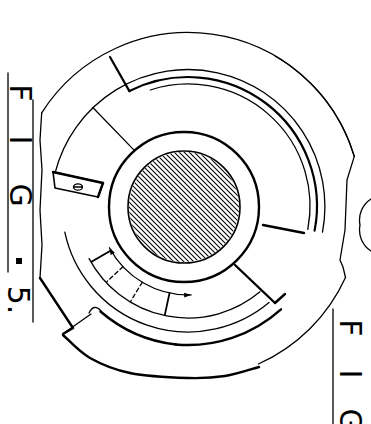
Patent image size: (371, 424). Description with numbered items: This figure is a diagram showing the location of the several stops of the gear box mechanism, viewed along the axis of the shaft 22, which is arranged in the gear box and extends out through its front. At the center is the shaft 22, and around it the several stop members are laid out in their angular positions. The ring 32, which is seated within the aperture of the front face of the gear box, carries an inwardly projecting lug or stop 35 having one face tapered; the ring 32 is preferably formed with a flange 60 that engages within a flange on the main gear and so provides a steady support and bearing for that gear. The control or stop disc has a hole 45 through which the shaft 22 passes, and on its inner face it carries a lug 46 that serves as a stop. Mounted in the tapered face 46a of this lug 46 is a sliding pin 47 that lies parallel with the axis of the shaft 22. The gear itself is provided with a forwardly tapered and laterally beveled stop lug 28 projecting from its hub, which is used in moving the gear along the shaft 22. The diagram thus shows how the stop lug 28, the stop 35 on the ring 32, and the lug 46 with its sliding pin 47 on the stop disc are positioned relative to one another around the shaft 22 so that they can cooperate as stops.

The shaft 22 is at (197, 253).
The stop lug 28 is at (121, 283).
The ring 32 is at (193, 364).
The inwardly projecting lug or stop 35 is at (250, 273).
The hole 45 is at (90, 95).
The lug 46 is at (56, 190).
The tapered face 46a is at (62, 172).
The sliding pin 47 is at (76, 190).
The flange 60 is at (322, 110).